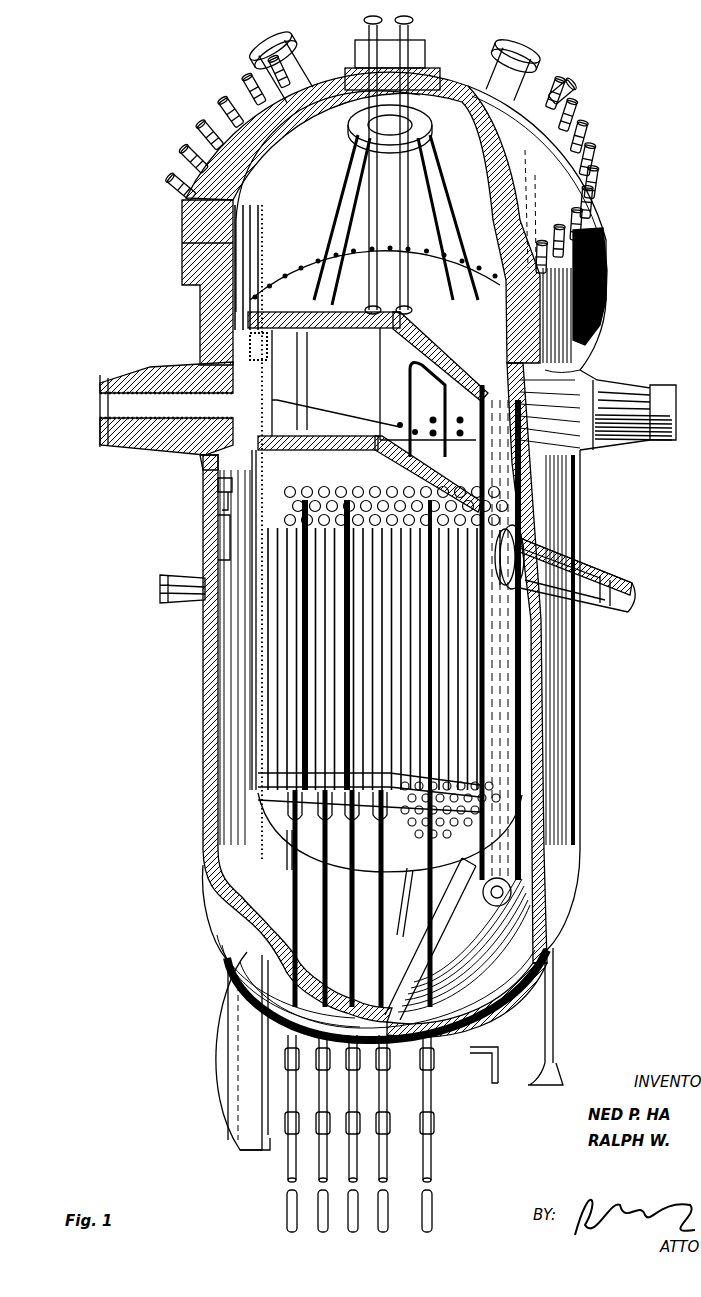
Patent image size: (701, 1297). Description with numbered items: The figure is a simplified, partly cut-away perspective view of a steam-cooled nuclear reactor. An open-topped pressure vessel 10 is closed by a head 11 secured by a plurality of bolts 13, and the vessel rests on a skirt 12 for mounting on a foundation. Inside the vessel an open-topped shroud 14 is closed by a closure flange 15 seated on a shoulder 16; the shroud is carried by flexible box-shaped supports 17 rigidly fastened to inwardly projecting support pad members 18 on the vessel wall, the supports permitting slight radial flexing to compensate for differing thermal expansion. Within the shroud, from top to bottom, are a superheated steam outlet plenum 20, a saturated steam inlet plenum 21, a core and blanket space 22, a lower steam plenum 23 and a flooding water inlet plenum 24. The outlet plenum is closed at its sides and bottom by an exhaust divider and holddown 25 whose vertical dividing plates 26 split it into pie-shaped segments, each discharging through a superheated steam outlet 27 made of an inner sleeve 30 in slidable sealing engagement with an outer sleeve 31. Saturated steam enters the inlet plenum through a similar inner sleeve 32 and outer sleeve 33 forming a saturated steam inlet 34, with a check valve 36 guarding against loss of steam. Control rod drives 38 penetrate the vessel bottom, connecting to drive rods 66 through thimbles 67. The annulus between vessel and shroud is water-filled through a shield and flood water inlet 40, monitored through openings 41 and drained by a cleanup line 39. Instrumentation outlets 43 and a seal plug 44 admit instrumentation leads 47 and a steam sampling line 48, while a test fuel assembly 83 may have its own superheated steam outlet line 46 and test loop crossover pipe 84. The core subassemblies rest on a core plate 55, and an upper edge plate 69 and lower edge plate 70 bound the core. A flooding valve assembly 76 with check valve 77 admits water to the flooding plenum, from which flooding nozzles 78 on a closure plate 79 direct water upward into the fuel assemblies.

The pressure vessel 10 is at (580, 797).
The head 11 is at (608, 248).
The skirt 12 is at (553, 987).
The bolts 13 is at (580, 145).
The shroud 14 is at (253, 703).
The closure flange 15 is at (282, 265).
The shoulder 16 is at (250, 340).
The flexible box-shaped supports 17 is at (205, 482).
The support pad members 18 is at (205, 530).
The superheated steam outlet plenum 20 is at (357, 385).
The saturated steam inlet plenum 21 is at (297, 480).
The core and blanket space 22 is at (256, 661).
The lower steam plenum 23 is at (512, 786).
The flooding water inlet plenum 24 is at (411, 875).
The exhaust divider and holddown 25 is at (260, 363).
The vertical dividing plates 26 is at (385, 422).
The superheated steam outlet 27 is at (150, 373).
The inner sleeve 30 is at (108, 400).
The outer sleeve 31 is at (108, 422).
The inner sleeve 32 is at (607, 557).
The outer sleeve 33 is at (632, 600).
The saturated steam inlet 34 is at (630, 568).
The check valve 36 is at (570, 543).
The control rod drives 38 is at (437, 1172).
The cleanup line 39 is at (501, 1073).
The shield and flood water inlet 40 is at (207, 465).
The openings 41 is at (562, 98).
The instrumentation outlets 43 is at (290, 38).
The seal plug 44 is at (425, 45).
The superheated steam outlet line 46 is at (397, 553).
The instrumentation leads 47 is at (443, 180).
The steam sampling line 48 is at (315, 347).
The core plate 55 is at (257, 792).
The drive rods 66 is at (282, 832).
The thimbles 67 is at (438, 1060).
The upper edge plate 69 is at (203, 600).
The lower edge plate 70 is at (253, 756).
The flooding valve assembly 76 is at (478, 922).
The check valve 77 is at (512, 882).
The flooding nozzles 78 is at (287, 865).
The closure plate 79 is at (262, 818).
The test fuel assembly 83 is at (407, 727).
The test loop crossover pipe 84 is at (447, 377).